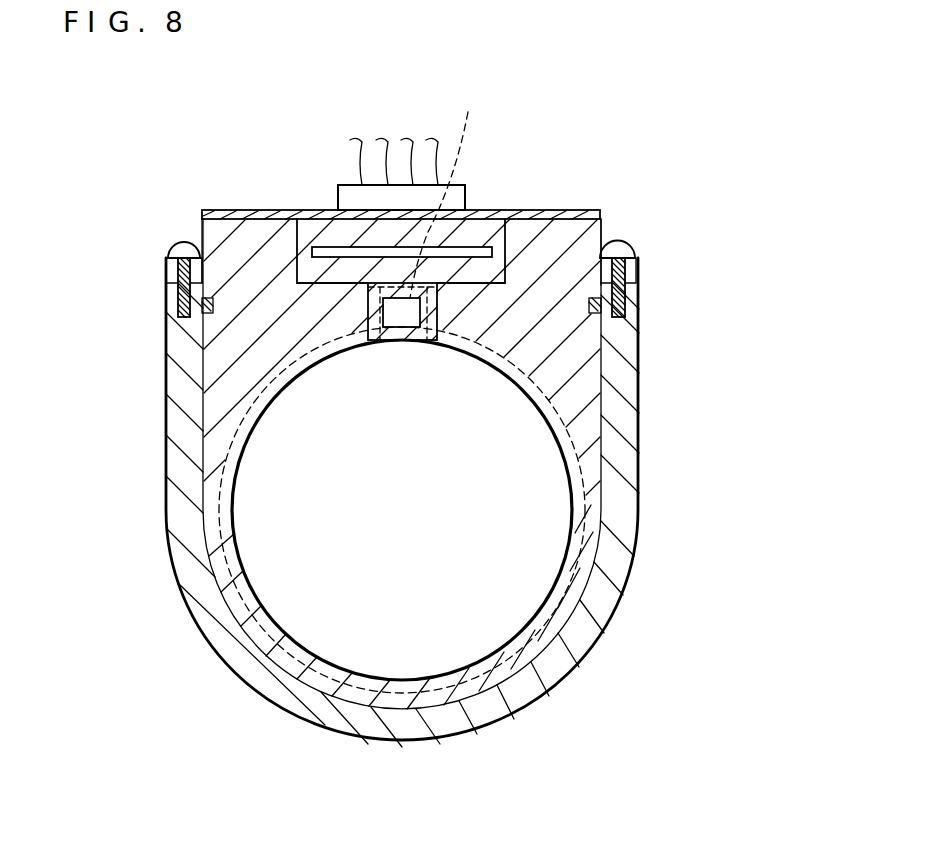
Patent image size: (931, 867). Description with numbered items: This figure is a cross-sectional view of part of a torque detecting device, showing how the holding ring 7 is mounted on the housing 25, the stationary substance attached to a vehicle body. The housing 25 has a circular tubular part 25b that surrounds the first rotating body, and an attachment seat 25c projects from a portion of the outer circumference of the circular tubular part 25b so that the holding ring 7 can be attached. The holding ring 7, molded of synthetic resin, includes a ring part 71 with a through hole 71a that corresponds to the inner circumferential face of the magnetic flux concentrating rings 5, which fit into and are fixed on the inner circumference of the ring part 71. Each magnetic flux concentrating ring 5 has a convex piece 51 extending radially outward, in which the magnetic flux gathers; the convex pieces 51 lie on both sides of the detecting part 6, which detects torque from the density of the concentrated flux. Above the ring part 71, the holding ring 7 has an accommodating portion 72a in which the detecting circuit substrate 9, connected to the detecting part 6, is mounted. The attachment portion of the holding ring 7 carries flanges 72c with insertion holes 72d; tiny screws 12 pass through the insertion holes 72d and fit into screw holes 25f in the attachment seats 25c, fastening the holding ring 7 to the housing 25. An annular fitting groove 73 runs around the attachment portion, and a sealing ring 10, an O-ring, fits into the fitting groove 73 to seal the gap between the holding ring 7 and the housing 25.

The magnetic flux concentrating ring 5 is at (612, 627).
The detecting part 6 is at (420, 300).
The holding ring 7 is at (592, 516).
The detecting circuit substrate 9 is at (323, 248).
The sealing ring 10 is at (613, 316).
The tiny screw 12 is at (178, 244).
The housing 25 is at (623, 600).
The circular tubular part 25b is at (565, 228).
The attachment seat 25c is at (166, 278).
The screw hole 25f is at (187, 317).
The convex piece 51 is at (450, 190).
The ring part 71 is at (470, 695).
The through hole 71a is at (497, 636).
The accommodating portion 72a is at (300, 215).
The flange 72c is at (168, 261).
The insertion hole 72d is at (176, 244).
The annular fitting groove 73 is at (603, 309).